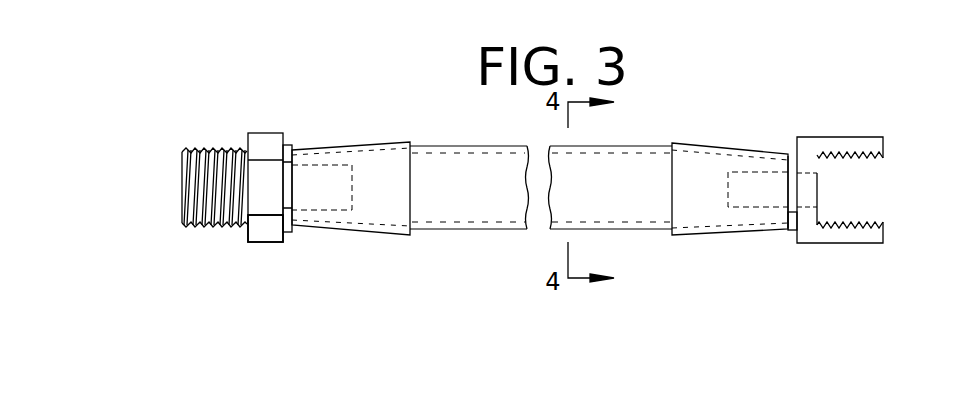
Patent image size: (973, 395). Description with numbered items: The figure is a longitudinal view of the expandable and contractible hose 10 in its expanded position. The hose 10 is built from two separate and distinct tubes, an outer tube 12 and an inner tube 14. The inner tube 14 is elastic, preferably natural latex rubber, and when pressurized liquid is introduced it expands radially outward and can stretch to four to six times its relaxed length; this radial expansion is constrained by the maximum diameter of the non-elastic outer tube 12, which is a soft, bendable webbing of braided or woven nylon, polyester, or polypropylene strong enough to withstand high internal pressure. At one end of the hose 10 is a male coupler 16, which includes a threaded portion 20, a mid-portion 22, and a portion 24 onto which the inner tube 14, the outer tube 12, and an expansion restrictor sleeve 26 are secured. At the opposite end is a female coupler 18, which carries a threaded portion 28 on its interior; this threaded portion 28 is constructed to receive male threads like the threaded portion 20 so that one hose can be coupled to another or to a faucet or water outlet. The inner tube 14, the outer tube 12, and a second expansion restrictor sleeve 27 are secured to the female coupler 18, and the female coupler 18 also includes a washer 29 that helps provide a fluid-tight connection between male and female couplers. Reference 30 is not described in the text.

The hose 10 is at (786, 78).
The outer tube 12 is at (612, 146).
The inner tube 14 is at (617, 229).
The male coupler 16 is at (262, 133).
The female coupler 18 is at (852, 243).
The threaded portion 20 is at (217, 228).
The mid-portion 22 is at (270, 243).
The portion 24 is at (286, 145).
The expansion restrictor sleeve 26 is at (387, 236).
The expansion restrictor sleeve 27 is at (698, 143).
The threaded portion 28 is at (868, 137).
The washer 29 is at (792, 231).
The sleeve end face 30 is at (789, 160).